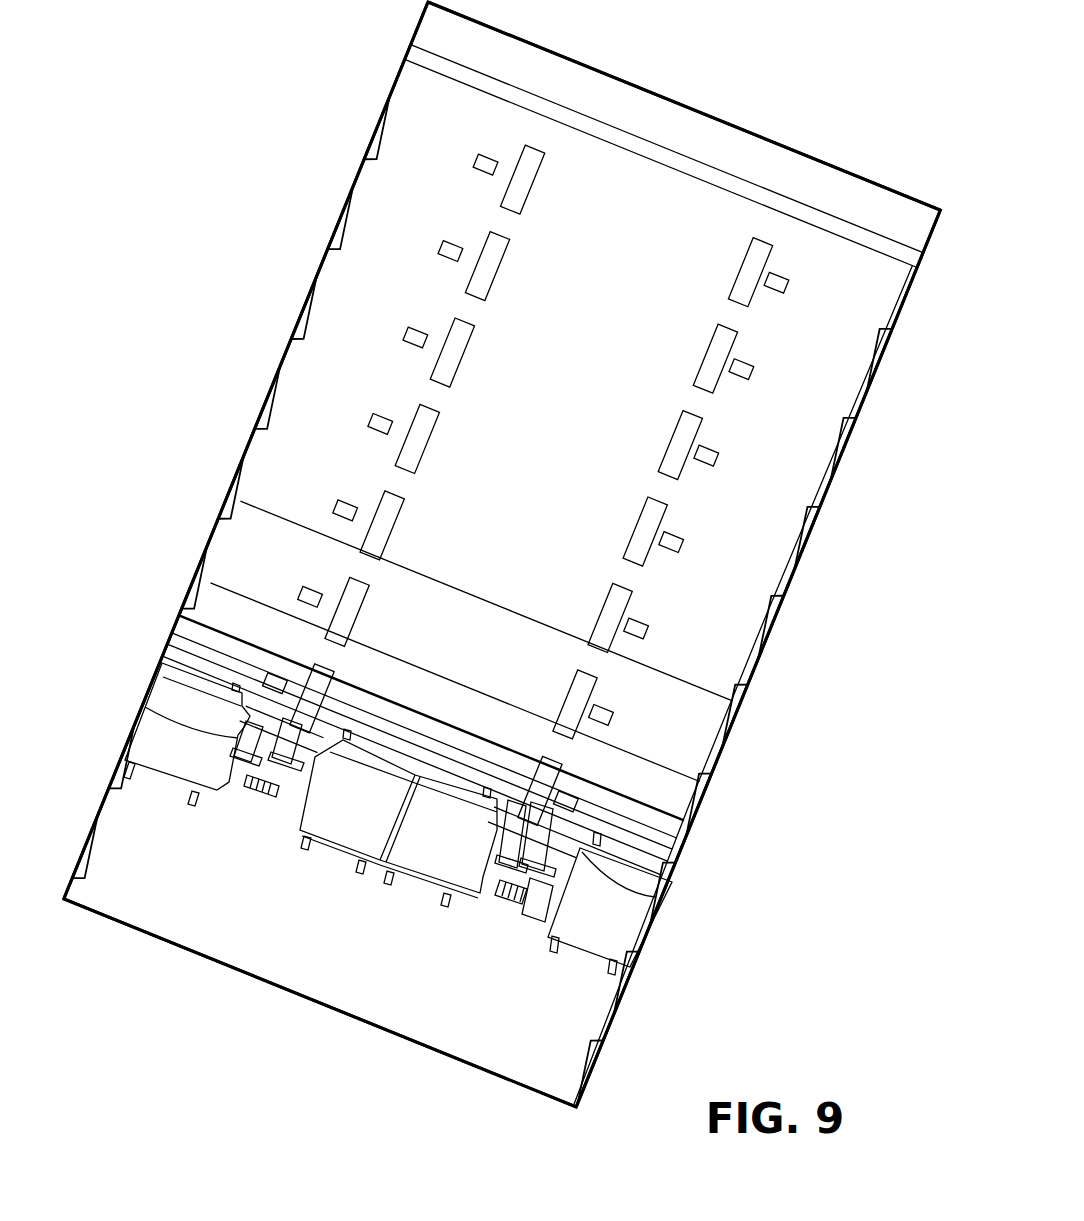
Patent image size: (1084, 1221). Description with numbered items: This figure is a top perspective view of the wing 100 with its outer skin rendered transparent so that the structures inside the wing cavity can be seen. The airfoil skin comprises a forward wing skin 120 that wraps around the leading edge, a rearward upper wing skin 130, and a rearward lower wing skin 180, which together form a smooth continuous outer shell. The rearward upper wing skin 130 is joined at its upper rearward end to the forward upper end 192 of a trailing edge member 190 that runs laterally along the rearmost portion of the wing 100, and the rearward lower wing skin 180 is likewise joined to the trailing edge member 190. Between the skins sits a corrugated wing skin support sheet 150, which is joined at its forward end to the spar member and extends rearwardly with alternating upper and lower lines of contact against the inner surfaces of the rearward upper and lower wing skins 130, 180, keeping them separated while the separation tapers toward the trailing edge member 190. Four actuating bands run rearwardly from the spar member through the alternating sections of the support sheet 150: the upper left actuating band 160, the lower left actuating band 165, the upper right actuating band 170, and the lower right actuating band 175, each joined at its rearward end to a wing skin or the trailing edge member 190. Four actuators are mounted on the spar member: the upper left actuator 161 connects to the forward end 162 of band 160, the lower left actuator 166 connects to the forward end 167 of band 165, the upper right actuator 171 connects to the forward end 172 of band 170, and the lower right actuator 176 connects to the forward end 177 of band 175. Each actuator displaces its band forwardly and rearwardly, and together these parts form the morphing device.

The wing 100 is at (72, 940).
The forward wing skin 120 is at (288, 993).
The rearward upper wing skin 130 is at (241, 451).
The wing skin support sheet 150 is at (897, 332).
The upper left actuating band 160 is at (468, 345).
The upper left actuator 161 is at (352, 830).
The forward end of the upper left actuating band 162 is at (283, 690).
The lower left actuating band 165 is at (420, 333).
The lower left actuator 166 is at (195, 770).
The forward end of the lower left actuating band 167 is at (268, 800).
The upper right actuating band 170 is at (672, 440).
The upper right actuator 171 is at (430, 875).
The forward end of the upper right actuating band 172 is at (543, 837).
The lower right actuating band 175 is at (747, 377).
The lower right actuator 176 is at (596, 945).
The forward end of the lower right actuating band 177 is at (553, 873).
The rearward lower wing skin 180 is at (761, 679).
The trailing edge member 190 is at (725, 115).
The forward upper end of the trailing edge member 192 is at (502, 80).